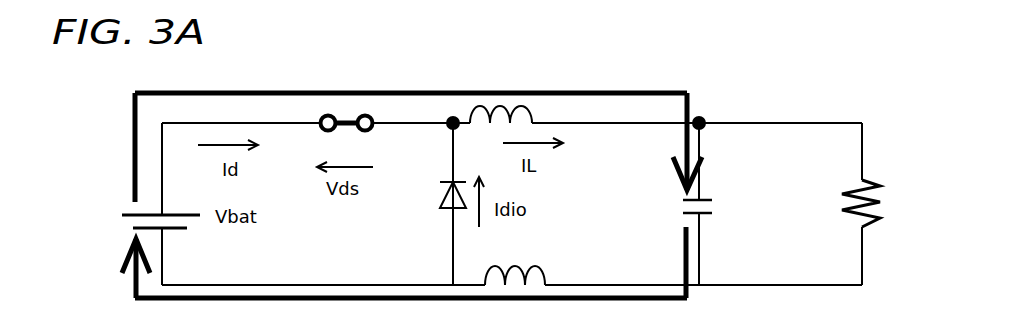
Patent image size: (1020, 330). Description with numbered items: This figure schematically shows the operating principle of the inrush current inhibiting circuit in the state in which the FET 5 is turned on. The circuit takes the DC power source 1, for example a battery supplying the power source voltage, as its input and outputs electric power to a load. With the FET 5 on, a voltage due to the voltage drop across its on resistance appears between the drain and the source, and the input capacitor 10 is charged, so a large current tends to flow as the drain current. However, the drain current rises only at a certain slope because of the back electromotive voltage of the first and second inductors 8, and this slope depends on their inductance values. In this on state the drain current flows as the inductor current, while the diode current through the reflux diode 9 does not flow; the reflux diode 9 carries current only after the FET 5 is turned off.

The DC power source 1 is at (125, 213).
The FET 5 is at (373, 105).
The inductors 8 is at (533, 110).
The reflux diode 9 is at (445, 207).
The input capacitor 10 is at (712, 213).